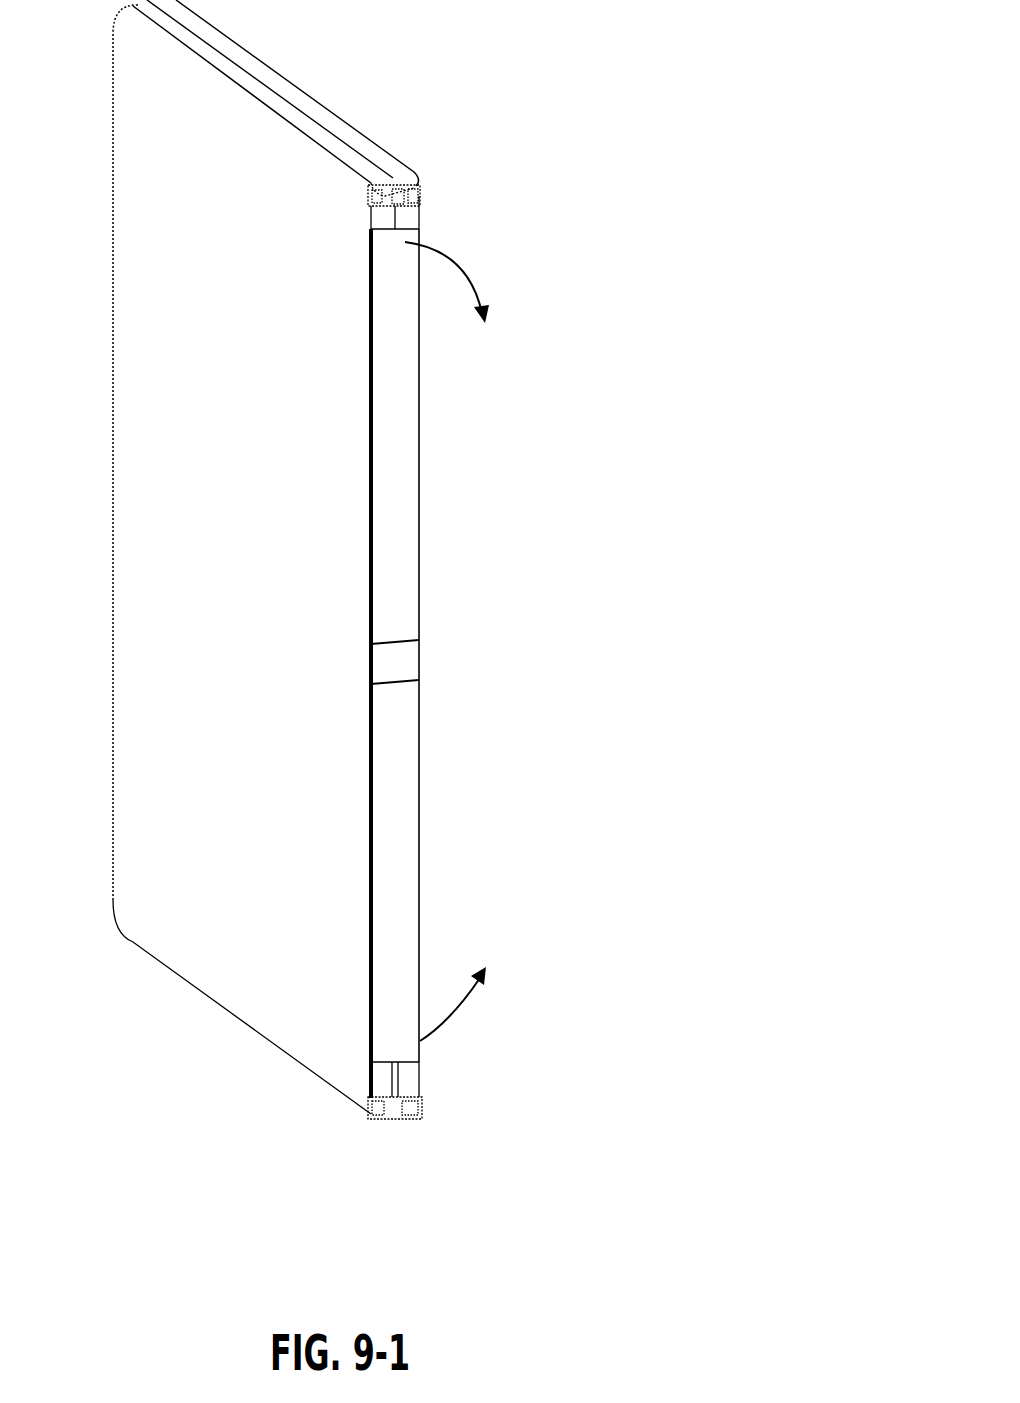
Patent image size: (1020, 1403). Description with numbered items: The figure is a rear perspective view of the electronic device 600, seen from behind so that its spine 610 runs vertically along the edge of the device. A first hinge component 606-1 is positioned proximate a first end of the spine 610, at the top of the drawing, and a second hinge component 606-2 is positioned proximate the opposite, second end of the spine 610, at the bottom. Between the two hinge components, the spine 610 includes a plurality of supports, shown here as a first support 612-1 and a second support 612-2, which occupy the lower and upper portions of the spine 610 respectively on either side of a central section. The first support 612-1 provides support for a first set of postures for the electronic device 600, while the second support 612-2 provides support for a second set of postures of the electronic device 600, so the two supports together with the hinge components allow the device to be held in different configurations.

The electronic device 600 is at (450, 119).
The first hinge component 606-1 is at (420, 199).
The second support 612-2 is at (420, 412).
The spine 610 is at (445, 658).
The first support 612-1 is at (420, 925).
The second hinge component 606-2 is at (420, 1080).